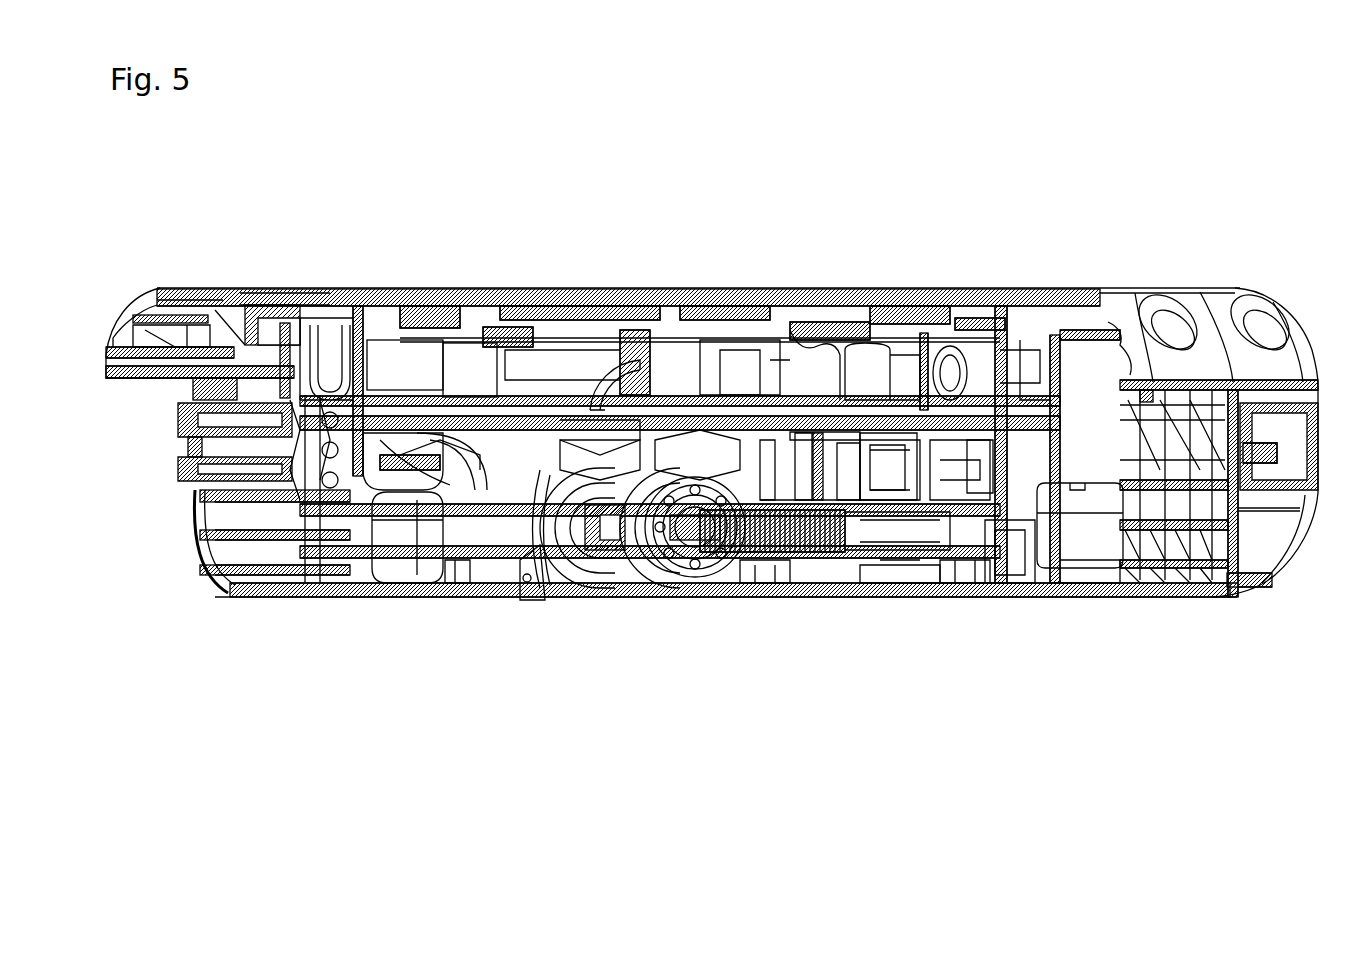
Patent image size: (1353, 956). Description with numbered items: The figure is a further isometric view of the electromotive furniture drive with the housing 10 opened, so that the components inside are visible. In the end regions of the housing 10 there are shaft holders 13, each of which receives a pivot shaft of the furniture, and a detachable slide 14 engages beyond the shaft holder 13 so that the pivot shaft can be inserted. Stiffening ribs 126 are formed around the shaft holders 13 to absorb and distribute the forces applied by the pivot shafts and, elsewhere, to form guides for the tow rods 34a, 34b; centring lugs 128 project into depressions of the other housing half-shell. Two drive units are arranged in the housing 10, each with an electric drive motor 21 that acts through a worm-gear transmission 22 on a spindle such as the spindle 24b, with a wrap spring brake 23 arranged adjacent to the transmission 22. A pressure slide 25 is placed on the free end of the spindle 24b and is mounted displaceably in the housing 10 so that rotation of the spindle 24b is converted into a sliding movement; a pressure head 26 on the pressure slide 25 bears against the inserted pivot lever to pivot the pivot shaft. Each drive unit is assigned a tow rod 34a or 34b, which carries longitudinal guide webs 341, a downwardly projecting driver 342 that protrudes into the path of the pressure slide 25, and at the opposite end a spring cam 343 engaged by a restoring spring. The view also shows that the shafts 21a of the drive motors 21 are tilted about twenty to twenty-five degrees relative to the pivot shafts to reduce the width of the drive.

The housing 10 is at (993, 212).
The shaft holder 13 is at (346, 330).
The slide 14 is at (1195, 380).
The drive motor 21 is at (625, 305).
The shaft of the drive motor 21a is at (663, 470).
The transmission 22 is at (607, 588).
The brake 23 is at (666, 598).
The spindle 24b is at (707, 597).
The pressure slide 25 is at (380, 598).
The pressure head 26 is at (1075, 548).
The tow rod 34a is at (497, 597).
The tow rod 34b is at (905, 497).
The stiffening ribs 126 is at (645, 465).
The centring lugs 128 is at (178, 477).
The guide webs 341 is at (471, 322).
The driver 342 is at (447, 597).
The spring cam 343 is at (766, 597).